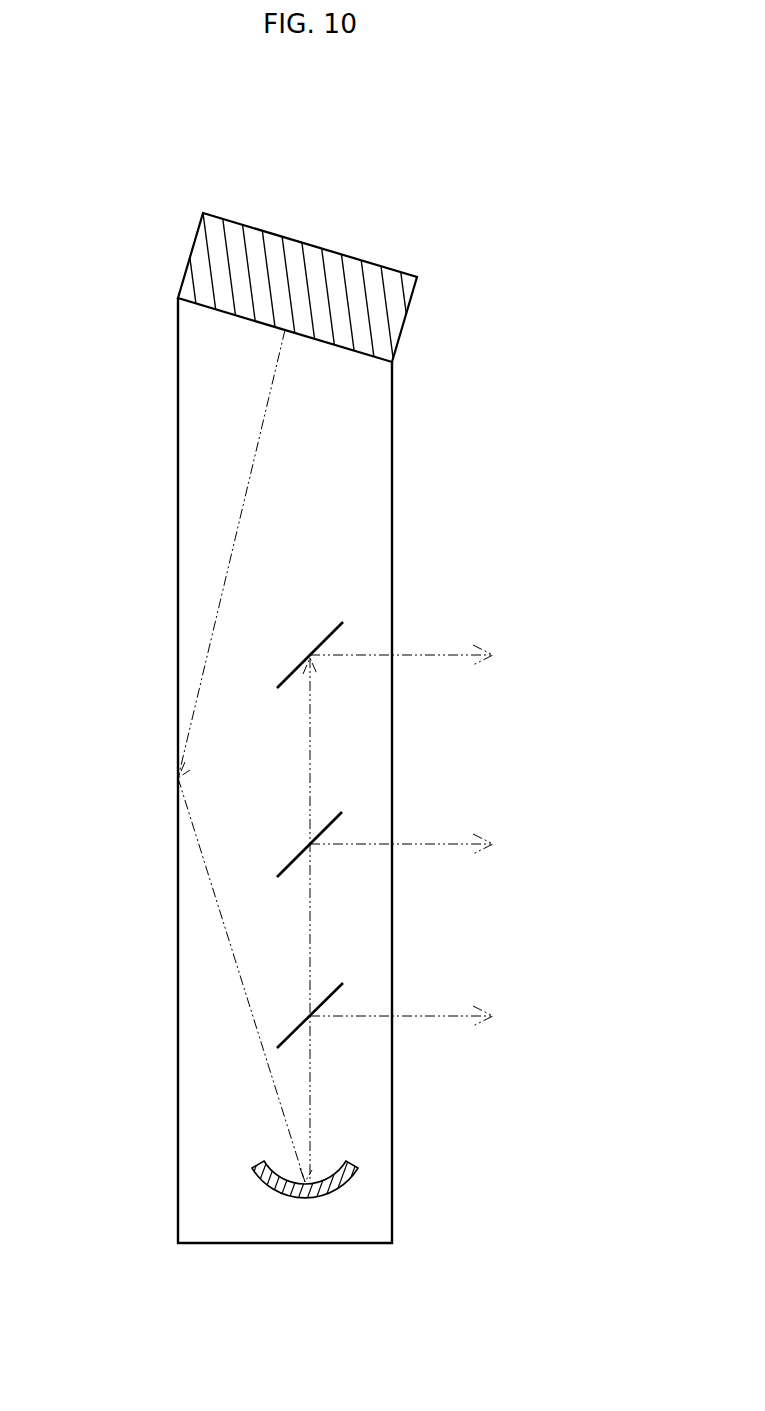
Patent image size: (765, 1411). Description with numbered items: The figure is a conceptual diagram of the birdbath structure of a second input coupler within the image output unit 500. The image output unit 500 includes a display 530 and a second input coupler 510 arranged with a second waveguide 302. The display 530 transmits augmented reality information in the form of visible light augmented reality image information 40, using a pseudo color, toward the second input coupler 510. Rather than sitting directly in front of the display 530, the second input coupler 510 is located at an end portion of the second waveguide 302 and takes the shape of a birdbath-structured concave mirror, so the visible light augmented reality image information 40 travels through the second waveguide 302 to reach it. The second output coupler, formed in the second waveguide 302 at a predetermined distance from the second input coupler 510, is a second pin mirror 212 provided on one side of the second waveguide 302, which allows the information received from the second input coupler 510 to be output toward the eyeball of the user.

The image output unit 500 is at (458, 170).
The display 530 is at (388, 315).
The visible light augmented reality image information 40 is at (232, 555).
The second pin mirror 212 is at (327, 635).
The second input coupler 510 is at (285, 1195).
The second waveguide 302 is at (315, 1243).